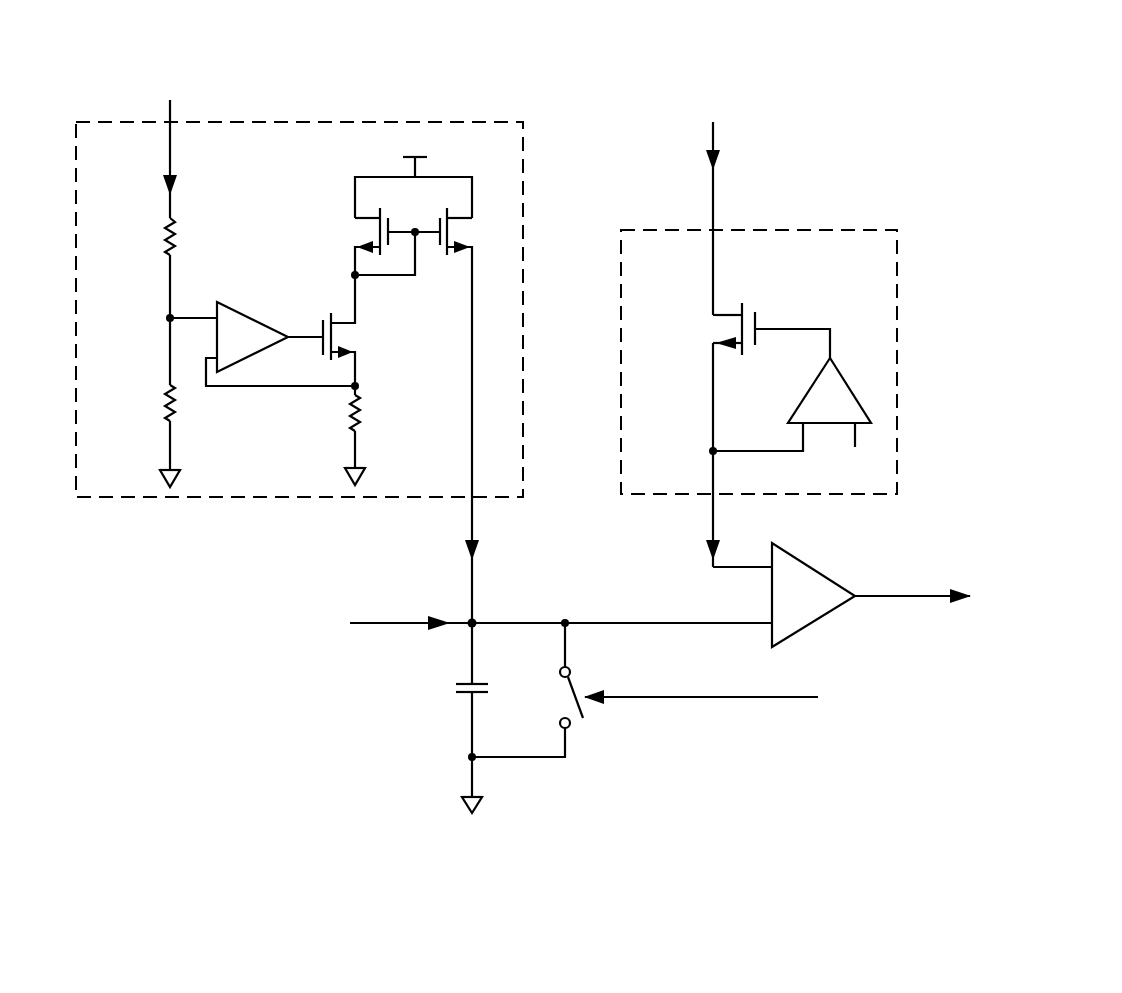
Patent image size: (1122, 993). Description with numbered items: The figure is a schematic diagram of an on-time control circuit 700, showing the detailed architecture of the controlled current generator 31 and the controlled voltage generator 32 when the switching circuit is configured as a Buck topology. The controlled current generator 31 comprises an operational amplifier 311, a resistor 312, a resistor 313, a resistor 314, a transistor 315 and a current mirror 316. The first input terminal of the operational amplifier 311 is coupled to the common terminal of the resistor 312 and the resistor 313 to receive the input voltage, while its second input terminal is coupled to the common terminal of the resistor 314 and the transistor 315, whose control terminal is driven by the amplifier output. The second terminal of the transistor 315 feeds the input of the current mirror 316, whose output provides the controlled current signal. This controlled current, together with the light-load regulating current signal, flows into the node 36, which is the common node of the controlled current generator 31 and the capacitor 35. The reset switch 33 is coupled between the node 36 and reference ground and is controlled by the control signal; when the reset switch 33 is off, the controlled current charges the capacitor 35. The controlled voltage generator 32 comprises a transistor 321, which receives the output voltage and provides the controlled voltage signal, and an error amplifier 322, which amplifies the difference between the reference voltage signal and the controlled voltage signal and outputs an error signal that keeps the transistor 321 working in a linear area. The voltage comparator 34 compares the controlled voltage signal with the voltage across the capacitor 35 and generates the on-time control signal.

The on-time control circuit 700 is at (916, 41).
The controlled current generator 31 is at (524, 145).
The controlled voltage generator 32 is at (900, 310).
The reset switch 33 is at (580, 694).
The voltage comparator 34 is at (805, 562).
The capacitor 35 is at (490, 697).
The node 36 is at (478, 621).
The operational amplifier 311 is at (248, 316).
The resistor 312 is at (158, 243).
The resistor 313 is at (158, 417).
The resistor 314 is at (366, 425).
The transistor 315 is at (362, 333).
The current mirror 316 is at (348, 232).
The transistor 321 is at (765, 318).
The error amplifier 322 is at (829, 379).